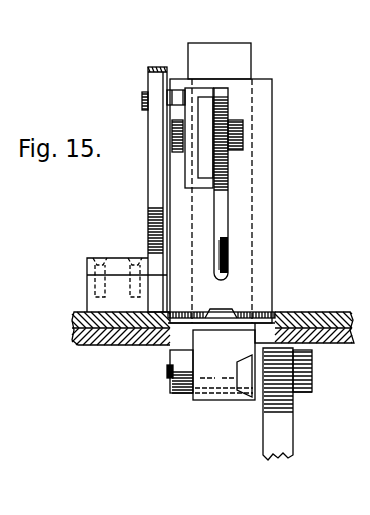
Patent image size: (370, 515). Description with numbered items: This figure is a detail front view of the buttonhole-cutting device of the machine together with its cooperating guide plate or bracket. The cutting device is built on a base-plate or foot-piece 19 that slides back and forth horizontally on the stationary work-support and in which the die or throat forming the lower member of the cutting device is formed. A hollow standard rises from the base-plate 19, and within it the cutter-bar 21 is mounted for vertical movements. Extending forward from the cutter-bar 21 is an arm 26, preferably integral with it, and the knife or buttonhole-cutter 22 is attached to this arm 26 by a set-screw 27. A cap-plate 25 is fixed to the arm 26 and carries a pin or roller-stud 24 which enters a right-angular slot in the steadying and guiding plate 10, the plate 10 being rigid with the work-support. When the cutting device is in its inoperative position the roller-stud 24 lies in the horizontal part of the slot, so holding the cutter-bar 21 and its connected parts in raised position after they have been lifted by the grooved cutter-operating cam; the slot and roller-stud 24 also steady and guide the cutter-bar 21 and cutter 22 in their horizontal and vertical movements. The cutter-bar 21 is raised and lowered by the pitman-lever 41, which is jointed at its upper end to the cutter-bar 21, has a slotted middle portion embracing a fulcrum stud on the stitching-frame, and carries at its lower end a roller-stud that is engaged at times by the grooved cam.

The steadying and guiding plate 10 is at (159, 68).
The base-plate or foot-piece 19 is at (218, 314).
The cutter-bar 21 is at (219, 61).
The cutter 22 is at (229, 266).
The pin or roller-stud 24 is at (142, 100).
The cap-plate 25 is at (185, 176).
The arm 26 is at (205, 167).
The set-screw 27 is at (243, 130).
The pitman-lever 41 is at (287, 433).